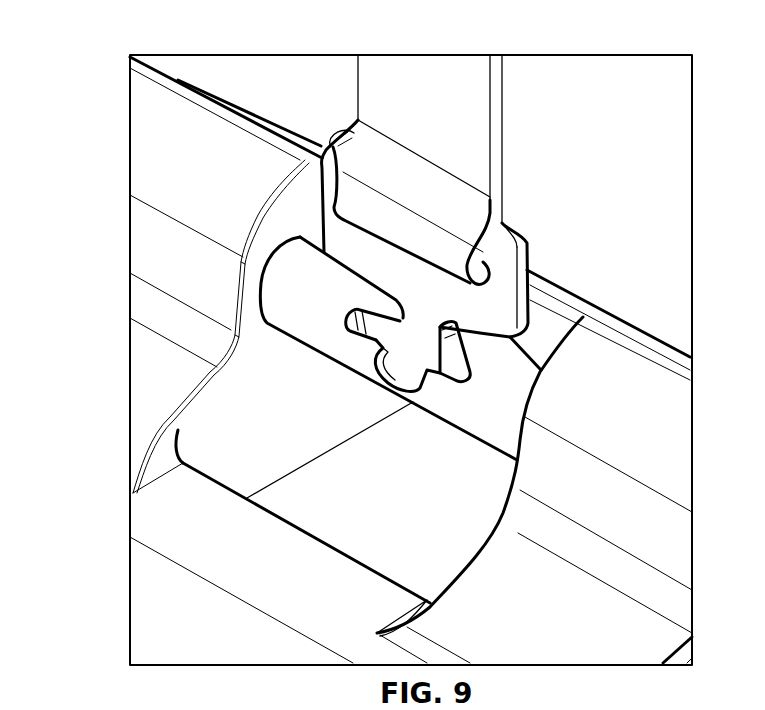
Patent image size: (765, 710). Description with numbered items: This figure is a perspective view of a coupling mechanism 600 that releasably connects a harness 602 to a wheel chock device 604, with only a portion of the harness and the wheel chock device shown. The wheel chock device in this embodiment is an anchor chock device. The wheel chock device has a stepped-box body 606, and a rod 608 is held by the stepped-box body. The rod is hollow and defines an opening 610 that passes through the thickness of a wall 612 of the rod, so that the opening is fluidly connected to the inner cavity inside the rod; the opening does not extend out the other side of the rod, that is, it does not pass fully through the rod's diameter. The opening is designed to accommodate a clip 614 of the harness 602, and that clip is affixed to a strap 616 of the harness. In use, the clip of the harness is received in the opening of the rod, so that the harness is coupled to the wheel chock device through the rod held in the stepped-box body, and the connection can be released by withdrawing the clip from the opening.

The coupling mechanism 600 is at (605, 210).
The harness 602 is at (494, 73).
The wheel chock device 604 is at (648, 375).
The stepped-box body 606 is at (163, 165).
The rod 608 is at (483, 402).
The opening 610 is at (435, 380).
The wall 612 is at (405, 380).
The clip 614 is at (498, 265).
The strap 616 is at (453, 97).